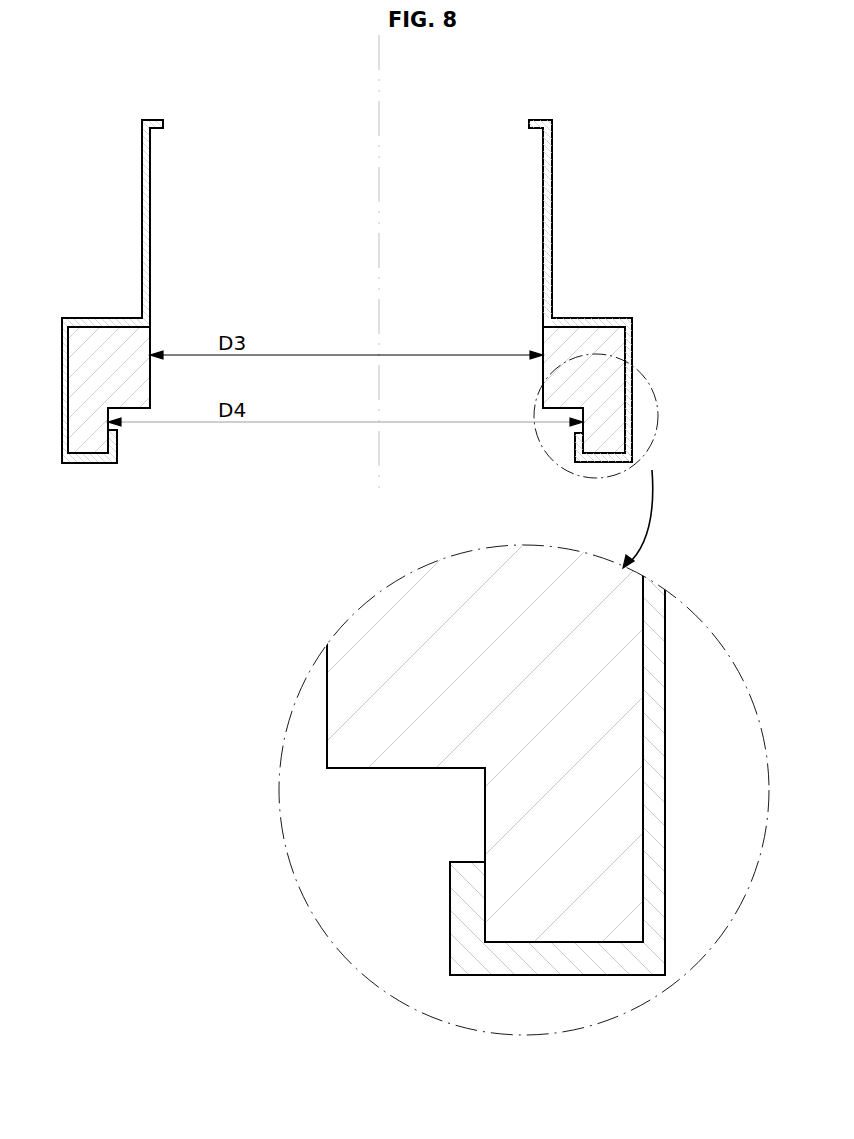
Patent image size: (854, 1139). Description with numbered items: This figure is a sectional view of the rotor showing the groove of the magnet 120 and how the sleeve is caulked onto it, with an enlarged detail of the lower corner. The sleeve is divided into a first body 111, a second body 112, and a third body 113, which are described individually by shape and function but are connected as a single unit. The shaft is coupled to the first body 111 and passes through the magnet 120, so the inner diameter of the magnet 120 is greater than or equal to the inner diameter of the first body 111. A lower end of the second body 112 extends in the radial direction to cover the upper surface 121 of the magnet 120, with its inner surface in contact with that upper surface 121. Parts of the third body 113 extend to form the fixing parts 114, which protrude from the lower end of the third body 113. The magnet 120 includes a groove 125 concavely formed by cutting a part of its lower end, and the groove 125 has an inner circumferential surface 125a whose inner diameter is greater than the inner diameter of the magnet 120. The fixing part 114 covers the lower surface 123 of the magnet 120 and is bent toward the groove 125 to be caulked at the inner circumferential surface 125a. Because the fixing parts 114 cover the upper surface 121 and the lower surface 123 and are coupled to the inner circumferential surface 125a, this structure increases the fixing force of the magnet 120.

The first body 111 is at (553, 168).
The second body 112 is at (597, 317).
The third body 113 is at (632, 372).
The fixing part 114 is at (585, 462).
The magnet 120 is at (360, 683).
The upper surface 121 is at (592, 330).
The lower surface 123 is at (587, 942).
The groove 125 is at (385, 800).
The inner circumferential surface 125a is at (485, 838).